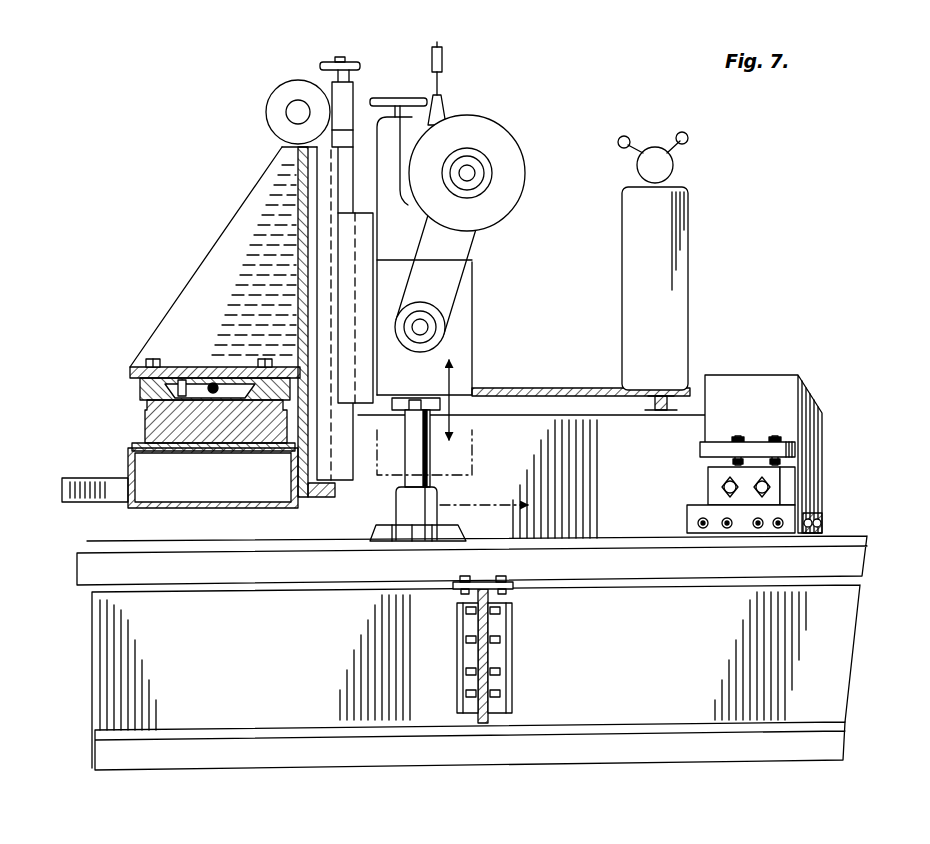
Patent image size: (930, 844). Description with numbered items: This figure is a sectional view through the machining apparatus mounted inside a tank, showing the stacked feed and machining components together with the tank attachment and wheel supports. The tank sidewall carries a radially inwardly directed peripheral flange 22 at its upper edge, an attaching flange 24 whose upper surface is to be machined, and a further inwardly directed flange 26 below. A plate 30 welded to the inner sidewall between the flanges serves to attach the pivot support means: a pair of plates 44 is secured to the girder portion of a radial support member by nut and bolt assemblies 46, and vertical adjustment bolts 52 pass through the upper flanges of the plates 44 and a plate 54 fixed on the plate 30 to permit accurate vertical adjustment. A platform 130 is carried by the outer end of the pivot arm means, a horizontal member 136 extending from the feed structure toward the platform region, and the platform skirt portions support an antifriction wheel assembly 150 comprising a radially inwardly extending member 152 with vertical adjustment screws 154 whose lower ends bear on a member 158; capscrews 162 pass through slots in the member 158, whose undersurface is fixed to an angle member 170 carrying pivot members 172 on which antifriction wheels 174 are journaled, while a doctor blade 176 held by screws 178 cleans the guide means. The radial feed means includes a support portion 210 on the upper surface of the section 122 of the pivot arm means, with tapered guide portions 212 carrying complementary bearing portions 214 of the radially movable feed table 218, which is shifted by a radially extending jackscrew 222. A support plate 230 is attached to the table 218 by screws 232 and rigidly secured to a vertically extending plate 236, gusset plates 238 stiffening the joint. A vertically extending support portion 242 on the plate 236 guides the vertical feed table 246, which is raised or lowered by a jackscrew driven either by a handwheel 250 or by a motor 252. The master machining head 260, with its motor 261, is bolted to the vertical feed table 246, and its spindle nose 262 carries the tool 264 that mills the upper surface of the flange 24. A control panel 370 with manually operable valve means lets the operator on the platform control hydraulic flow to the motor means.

The radially inwardly directed peripherally extending flange 22 is at (237, 593).
The attaching flange 24 is at (648, 571).
The radially inwardly directed peripherally extending flange 26 is at (160, 730).
The plate 30 is at (490, 658).
The plate 44 is at (500, 634).
The nut and bolt assembly 46 is at (464, 621).
The vertical adjustment bolt 52 is at (458, 585).
The plate 54 is at (482, 582).
The section of the pivot arm means 122 is at (227, 508).
The platform 130 is at (78, 504).
The mounting platform 136 is at (546, 387).
The antifriction wheel assembly 150 is at (826, 448).
The radially inwardly extending member 152 is at (700, 450).
The vertical adjustment screw 154 is at (742, 437).
The member 158 is at (790, 479).
The capscrew 162 is at (710, 489).
The angle member 170 is at (790, 511).
The pivot member 172 is at (724, 519).
The antifriction wheel 174 is at (724, 532).
The doctor blade 176 is at (823, 521).
The screw 178 is at (814, 536).
The support portion 210 is at (148, 422).
The radially extending tapered guide portion 212 is at (148, 416).
The bearing portion 214 is at (277, 378).
The radially movable feed table 218 is at (183, 378).
The radially extending jackscrew 222 is at (216, 382).
The support plate 230 is at (133, 365).
The screw 232 is at (152, 358).
The vertically extending plate 236 is at (298, 183).
The gusset plate 238 is at (232, 237).
The vertically extending support portion 242 is at (338, 498).
The vertical feed table 246 is at (368, 356).
The handwheel 250 is at (362, 66).
The motor 252 is at (287, 92).
The master machining head 260 is at (486, 287).
The motor 261 is at (498, 143).
The spindle nose 262 is at (438, 403).
The tool 264 is at (452, 493).
The control panel 370 is at (694, 277).